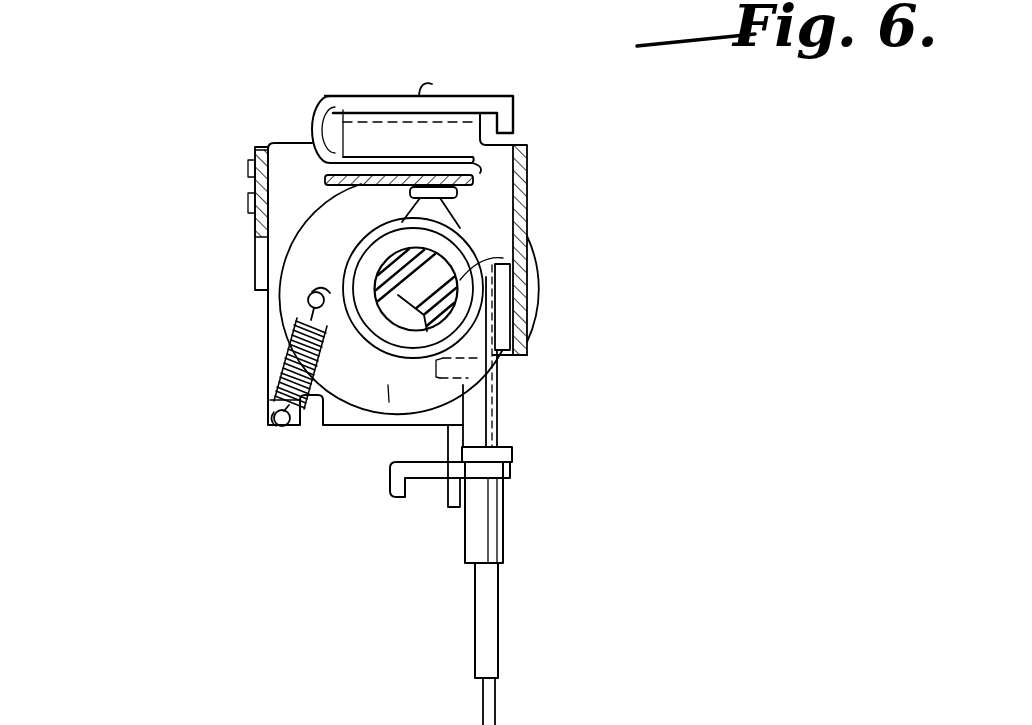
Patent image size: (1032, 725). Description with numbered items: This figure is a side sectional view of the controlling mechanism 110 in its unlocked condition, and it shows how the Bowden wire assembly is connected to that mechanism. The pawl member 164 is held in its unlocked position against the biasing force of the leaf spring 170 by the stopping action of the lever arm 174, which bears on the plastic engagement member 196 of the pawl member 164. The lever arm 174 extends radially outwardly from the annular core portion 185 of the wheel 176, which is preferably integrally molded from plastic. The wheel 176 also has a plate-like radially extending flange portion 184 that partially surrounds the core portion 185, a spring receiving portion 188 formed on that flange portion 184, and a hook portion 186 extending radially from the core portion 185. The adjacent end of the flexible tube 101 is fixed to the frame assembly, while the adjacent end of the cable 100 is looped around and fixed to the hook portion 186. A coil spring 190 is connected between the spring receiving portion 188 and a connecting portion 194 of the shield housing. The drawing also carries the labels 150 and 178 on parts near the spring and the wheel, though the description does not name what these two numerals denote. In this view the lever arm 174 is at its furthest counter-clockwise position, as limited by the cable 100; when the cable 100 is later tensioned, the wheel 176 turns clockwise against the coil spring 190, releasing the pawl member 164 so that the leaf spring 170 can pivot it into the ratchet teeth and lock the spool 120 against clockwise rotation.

The cable 100 is at (497, 398).
The flexible tube 101 is at (492, 655).
The controlling mechanism 110 is at (682, 191).
The spool 120 is at (380, 320).
The return spring 150 is at (267, 350).
The pawl member 164 is at (390, 187).
The leaf spring 170 is at (352, 124).
The lever arm 174 is at (438, 214).
The wheel 176 is at (465, 237).
The cam hub 178 is at (470, 267).
The flange portion 184 is at (388, 400).
The annular core portion 185 is at (290, 246).
The hook portion 186 is at (522, 292).
The spring receiving portion 188 is at (338, 282).
The coil spring 190 is at (268, 388).
The connecting portion 194 is at (273, 430).
The plastic engagement member 196 is at (470, 198).